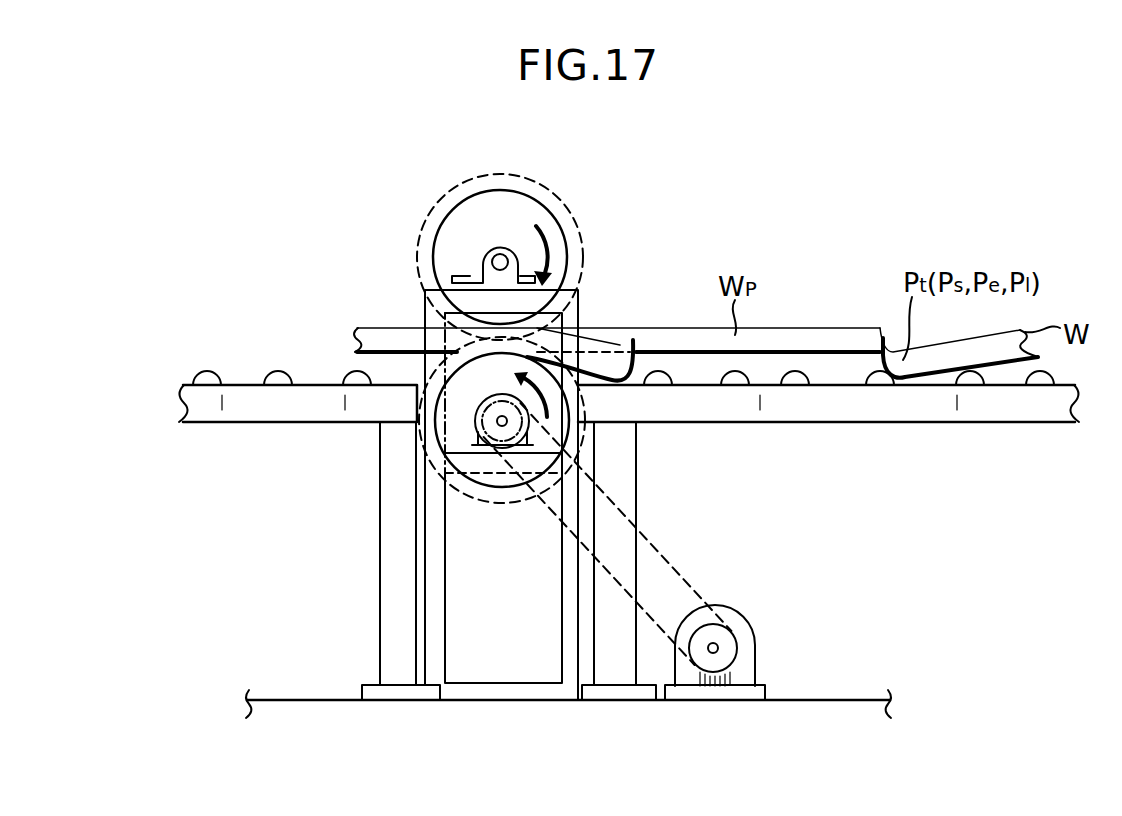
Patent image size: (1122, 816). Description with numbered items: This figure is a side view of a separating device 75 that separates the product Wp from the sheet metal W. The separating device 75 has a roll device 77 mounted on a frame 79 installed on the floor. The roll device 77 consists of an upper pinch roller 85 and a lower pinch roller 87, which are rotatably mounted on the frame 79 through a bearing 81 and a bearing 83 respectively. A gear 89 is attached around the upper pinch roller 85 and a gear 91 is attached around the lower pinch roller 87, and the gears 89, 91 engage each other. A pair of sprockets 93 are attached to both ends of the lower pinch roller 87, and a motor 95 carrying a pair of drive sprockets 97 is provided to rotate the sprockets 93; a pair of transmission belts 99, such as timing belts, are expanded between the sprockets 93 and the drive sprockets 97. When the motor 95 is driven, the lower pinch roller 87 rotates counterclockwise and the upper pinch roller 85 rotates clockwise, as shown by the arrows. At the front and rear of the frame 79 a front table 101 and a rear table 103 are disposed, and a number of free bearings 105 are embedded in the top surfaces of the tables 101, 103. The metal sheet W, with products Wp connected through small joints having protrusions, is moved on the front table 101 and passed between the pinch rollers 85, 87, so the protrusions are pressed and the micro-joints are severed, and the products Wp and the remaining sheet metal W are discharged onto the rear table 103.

The separating device 75 is at (654, 208).
The roll device 77 is at (395, 261).
The frame 79 is at (578, 300).
The bearing 81 is at (501, 255).
The bearing 83 is at (501, 428).
The upper pinch roller 85 is at (480, 215).
The lower pinch roller 87 is at (457, 430).
The gear 89 is at (553, 202).
The gear 91 is at (425, 473).
The sprockets 93 is at (468, 462).
The motor 95 is at (757, 636).
The drive sprockets 97 is at (723, 636).
The transmission belts 99 is at (668, 560).
The front table 101 is at (893, 421).
The rear table 103 is at (260, 398).
The free bearings 105 is at (278, 381).